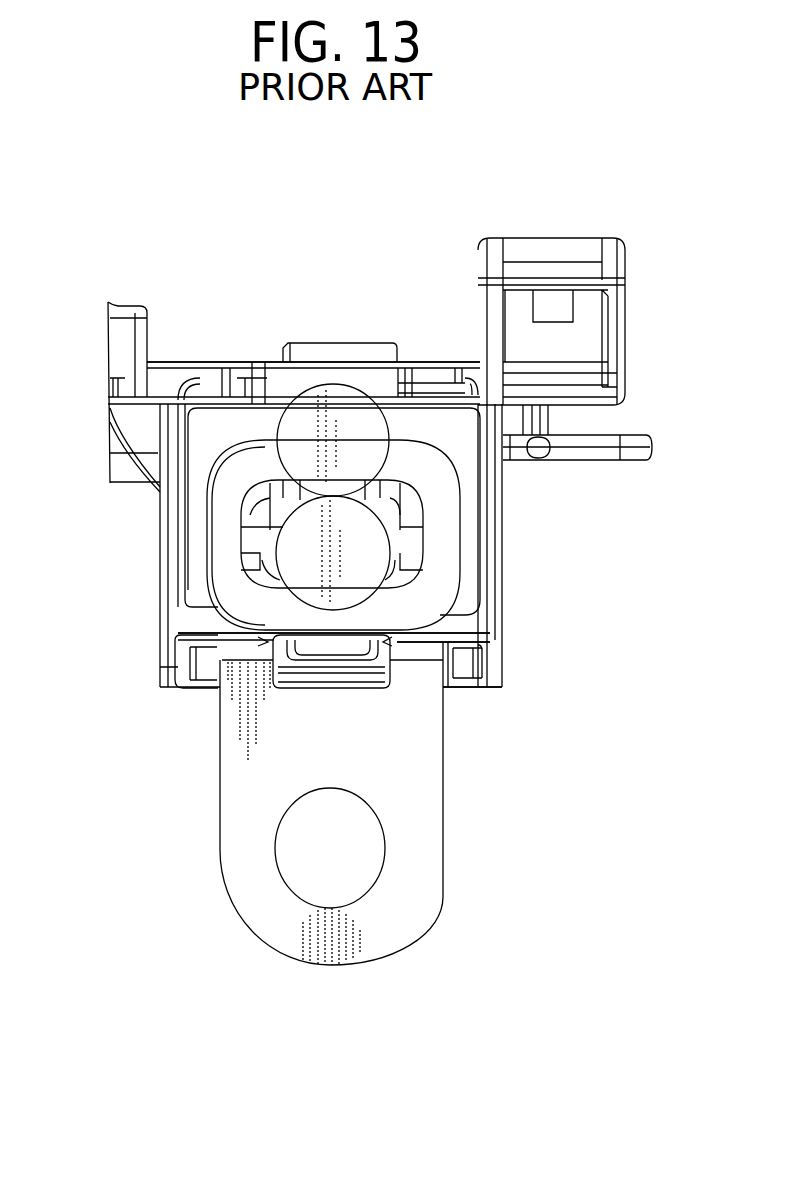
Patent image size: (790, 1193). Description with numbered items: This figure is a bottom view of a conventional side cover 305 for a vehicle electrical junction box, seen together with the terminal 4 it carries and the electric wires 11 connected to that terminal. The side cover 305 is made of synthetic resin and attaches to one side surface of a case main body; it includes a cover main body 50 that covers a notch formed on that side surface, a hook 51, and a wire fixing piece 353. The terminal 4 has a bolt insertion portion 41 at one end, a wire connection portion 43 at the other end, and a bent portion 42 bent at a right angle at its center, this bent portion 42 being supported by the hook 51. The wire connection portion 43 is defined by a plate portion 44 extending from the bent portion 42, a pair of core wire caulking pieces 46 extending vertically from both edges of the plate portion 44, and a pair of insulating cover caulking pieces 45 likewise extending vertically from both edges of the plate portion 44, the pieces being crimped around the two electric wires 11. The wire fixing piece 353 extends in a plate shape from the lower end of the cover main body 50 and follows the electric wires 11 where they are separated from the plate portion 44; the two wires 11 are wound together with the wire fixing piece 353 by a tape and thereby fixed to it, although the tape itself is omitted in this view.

The side cover 305 is at (446, 264).
The wire fixing piece 353 is at (328, 343).
The electric wire 11 is at (330, 553).
The cover main body 50 is at (437, 362).
The core wire caulking pieces 46 is at (265, 545).
The insulating cover caulking pieces 45 is at (215, 520).
The wire connection portion 43 is at (455, 540).
The hook 51 is at (503, 642).
The plate portion 44 is at (333, 647).
The bent portion 42 is at (418, 650).
The terminal 4 is at (460, 808).
The bolt insertion portion 41 is at (380, 873).